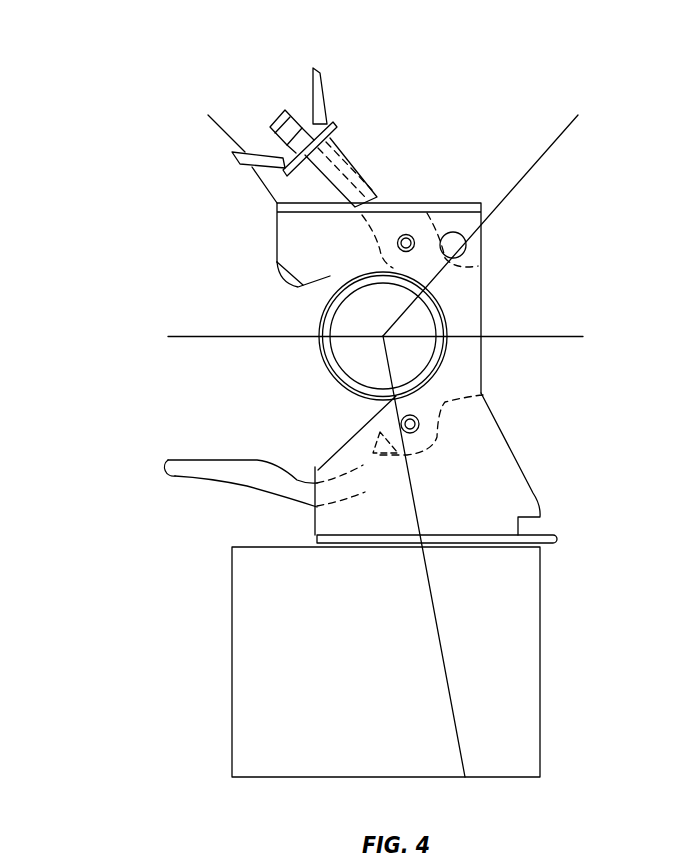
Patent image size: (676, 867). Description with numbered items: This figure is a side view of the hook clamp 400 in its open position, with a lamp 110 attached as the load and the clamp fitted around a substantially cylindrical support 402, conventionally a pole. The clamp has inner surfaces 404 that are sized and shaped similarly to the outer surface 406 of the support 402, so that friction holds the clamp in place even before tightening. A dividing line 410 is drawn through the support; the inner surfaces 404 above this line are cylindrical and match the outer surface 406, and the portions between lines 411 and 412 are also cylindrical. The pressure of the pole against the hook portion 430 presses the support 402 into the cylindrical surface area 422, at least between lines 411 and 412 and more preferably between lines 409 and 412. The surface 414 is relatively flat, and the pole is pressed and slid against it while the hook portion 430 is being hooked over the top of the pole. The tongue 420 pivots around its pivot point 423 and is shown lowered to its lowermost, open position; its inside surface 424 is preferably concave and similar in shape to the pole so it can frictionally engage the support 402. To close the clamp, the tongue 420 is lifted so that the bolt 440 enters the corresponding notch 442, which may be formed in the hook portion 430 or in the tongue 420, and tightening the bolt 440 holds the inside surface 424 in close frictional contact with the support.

The lamp 110 is at (386, 662).
The hook clamp 400 is at (512, 442).
The support 402 is at (322, 322).
The inner surfaces 404 is at (277, 259).
The outer surface 406 is at (365, 272).
The line 409 is at (218, 130).
The dividing line 410 is at (542, 333).
The line 411 is at (557, 142).
The line 412 is at (449, 687).
The surface 414 is at (360, 432).
The tongue 420 is at (227, 474).
The cylindrical surface area 422 is at (447, 353).
The pivot point 423 is at (413, 430).
The inside surface 424 is at (277, 437).
The hook portion 430 is at (285, 236).
The bolt 440 is at (284, 120).
The notch 442 is at (161, 485).